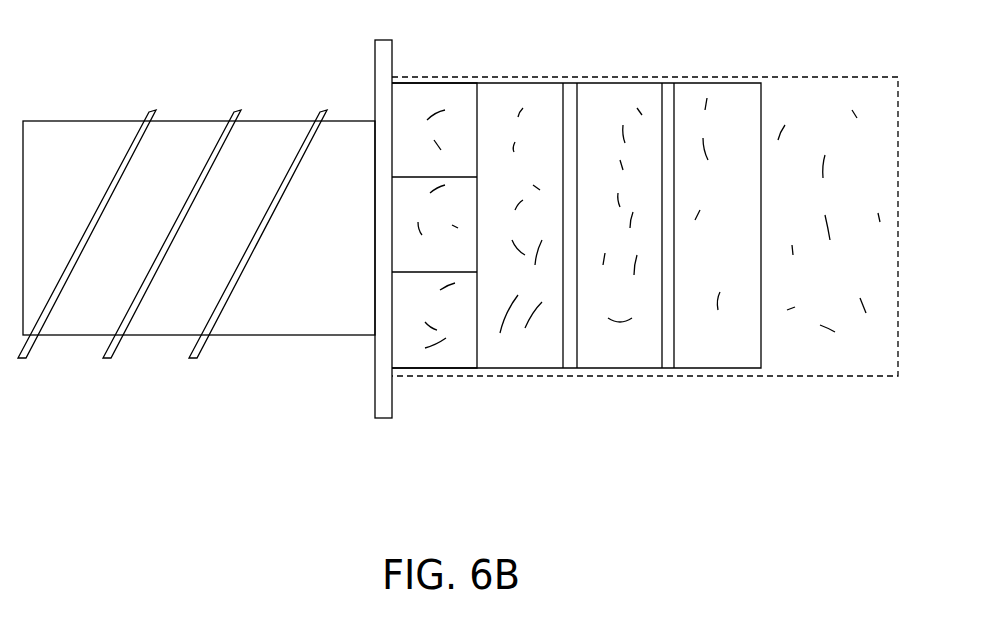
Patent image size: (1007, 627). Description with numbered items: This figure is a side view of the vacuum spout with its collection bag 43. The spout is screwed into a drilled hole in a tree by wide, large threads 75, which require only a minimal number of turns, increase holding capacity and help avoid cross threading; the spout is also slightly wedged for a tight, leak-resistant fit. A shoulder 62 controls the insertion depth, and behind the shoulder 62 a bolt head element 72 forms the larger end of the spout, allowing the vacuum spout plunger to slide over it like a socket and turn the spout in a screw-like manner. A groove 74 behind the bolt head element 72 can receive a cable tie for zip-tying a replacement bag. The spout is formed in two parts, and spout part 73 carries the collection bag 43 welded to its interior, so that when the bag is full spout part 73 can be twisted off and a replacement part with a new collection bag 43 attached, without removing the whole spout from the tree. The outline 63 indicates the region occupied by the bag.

The collection bag 43 is at (899, 283).
The shoulder 62 is at (383, 384).
The housing outline 63 is at (822, 77).
The bolt head element 72 is at (430, 88).
The spout part 73 is at (572, 358).
The groove 74 is at (665, 82).
The threads 75 is at (151, 109).